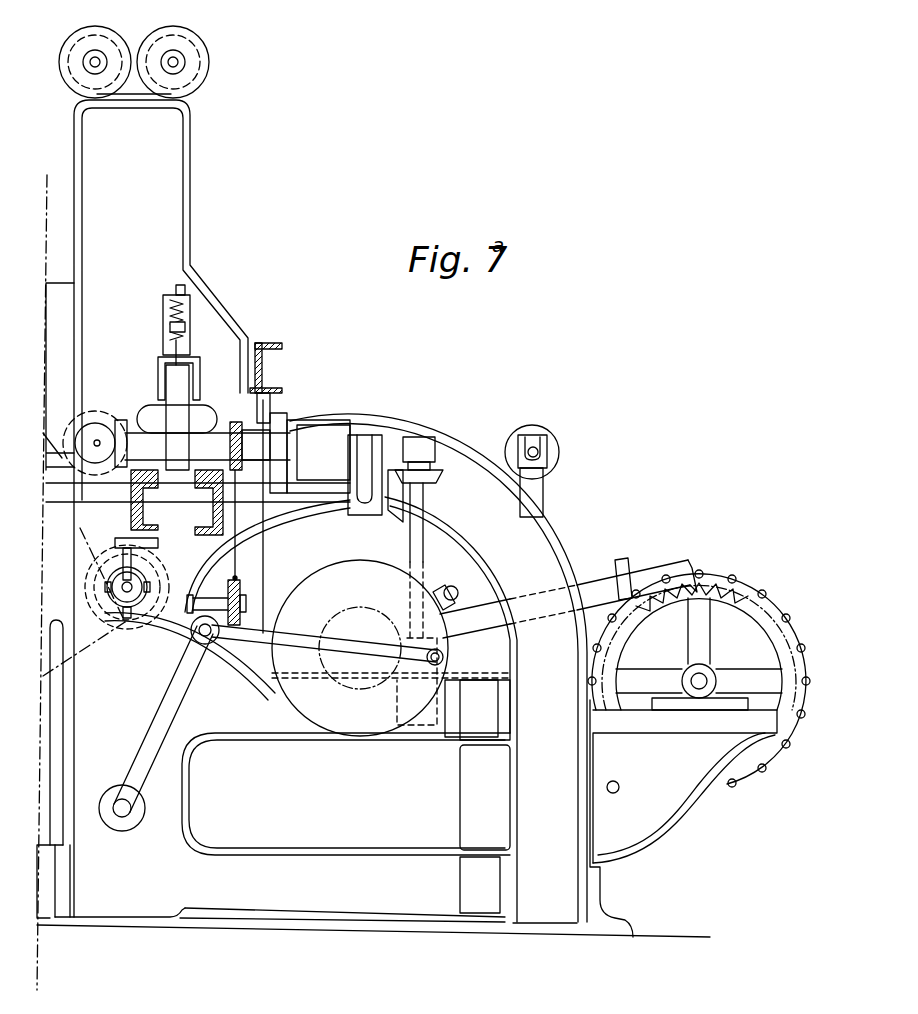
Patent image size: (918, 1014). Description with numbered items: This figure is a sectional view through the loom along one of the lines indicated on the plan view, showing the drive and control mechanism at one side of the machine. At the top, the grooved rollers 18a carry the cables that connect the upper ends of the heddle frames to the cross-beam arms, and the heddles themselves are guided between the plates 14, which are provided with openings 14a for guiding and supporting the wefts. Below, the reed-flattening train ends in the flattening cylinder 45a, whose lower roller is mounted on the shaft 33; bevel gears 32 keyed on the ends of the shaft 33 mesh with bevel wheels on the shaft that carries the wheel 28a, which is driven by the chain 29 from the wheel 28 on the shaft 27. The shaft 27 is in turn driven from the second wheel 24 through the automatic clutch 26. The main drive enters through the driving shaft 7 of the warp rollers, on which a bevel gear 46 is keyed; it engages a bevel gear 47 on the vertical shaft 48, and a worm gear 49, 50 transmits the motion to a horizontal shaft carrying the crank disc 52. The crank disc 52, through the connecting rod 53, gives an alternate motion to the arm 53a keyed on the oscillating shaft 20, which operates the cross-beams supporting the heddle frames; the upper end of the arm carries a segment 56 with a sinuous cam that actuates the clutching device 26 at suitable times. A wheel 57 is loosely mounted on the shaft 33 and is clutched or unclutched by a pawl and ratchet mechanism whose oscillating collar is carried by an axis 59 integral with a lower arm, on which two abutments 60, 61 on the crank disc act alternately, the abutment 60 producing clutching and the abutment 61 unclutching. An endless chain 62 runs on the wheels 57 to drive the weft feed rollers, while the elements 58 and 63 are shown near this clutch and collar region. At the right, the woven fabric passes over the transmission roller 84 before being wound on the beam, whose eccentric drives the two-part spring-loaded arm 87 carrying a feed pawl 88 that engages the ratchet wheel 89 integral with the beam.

The driving shaft 7 is at (44, 985).
The plates 14 is at (143, 508).
The openings 14a is at (148, 410).
The grooved rollers 18a is at (220, 73).
The oscillating shaft 20 is at (118, 818).
The second wheel 24 is at (90, 623).
The automatic clutch 26 is at (140, 573).
The shaft 27 is at (125, 593).
The wheel 28 is at (153, 602).
The wheel 28a is at (95, 403).
The chain 29 is at (80, 528).
The bevel gears 32 is at (87, 423).
The shaft 33 is at (94, 443).
The flattening cylinder 45a is at (180, 433).
The bevel gear 46 is at (400, 514).
The bevel gear 47 is at (432, 480).
The vertical shaft 48 is at (424, 551).
The worm gear 49 is at (407, 638).
The worm gear 50 is at (330, 622).
The crank disc 52 is at (391, 648).
The connecting rod 53 is at (298, 640).
The arm 53a is at (152, 738).
The segment 56 is at (223, 655).
The wheel 57 is at (260, 417).
The sleeve 58 is at (258, 442).
The axis 59 is at (298, 560).
The abutment 60 is at (339, 551).
The abutment 61 is at (462, 581).
The endless chain 62 is at (224, 547).
The rod 63 is at (242, 582).
The transmission roller 84 is at (560, 456).
The arm 87 is at (588, 582).
The feed pawl 88 is at (693, 562).
The ratchet wheel 89 is at (746, 600).